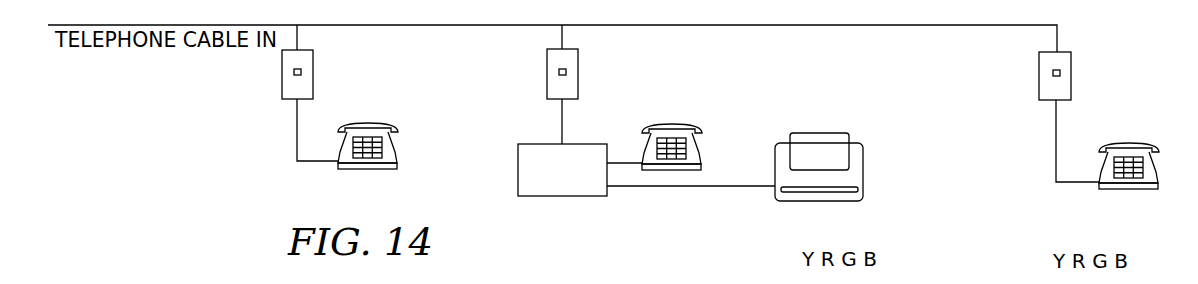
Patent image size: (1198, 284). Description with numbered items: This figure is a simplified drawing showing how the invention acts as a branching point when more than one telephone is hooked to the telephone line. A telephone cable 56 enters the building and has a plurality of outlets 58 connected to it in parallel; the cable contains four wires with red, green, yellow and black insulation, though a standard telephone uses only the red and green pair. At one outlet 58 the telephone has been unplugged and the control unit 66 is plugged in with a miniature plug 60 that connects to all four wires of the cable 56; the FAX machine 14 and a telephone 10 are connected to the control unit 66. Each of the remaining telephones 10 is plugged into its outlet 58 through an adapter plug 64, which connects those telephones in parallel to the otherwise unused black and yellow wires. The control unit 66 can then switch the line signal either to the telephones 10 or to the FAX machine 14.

The telephone 10 is at (385, 123).
The FAX machine 14 is at (865, 170).
The telephone cable 56 is at (712, 25).
The outlet 58 is at (282, 60).
The miniature plug 60 is at (559, 74).
The adapter plug 64 is at (294, 75).
The control unit 66 is at (518, 158).